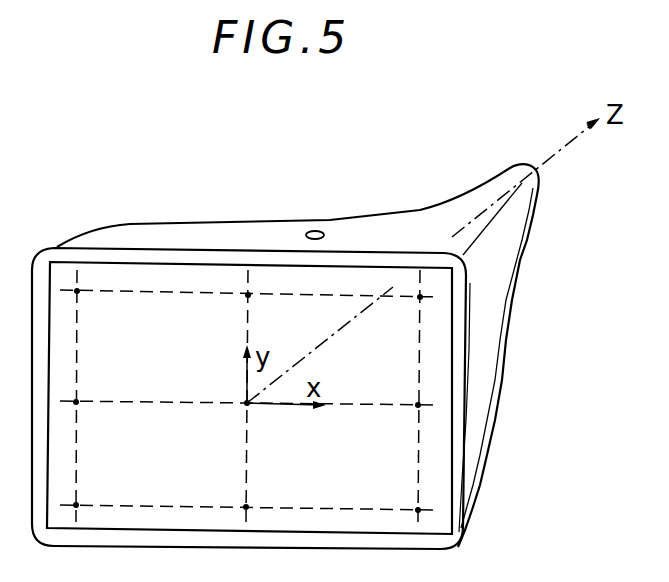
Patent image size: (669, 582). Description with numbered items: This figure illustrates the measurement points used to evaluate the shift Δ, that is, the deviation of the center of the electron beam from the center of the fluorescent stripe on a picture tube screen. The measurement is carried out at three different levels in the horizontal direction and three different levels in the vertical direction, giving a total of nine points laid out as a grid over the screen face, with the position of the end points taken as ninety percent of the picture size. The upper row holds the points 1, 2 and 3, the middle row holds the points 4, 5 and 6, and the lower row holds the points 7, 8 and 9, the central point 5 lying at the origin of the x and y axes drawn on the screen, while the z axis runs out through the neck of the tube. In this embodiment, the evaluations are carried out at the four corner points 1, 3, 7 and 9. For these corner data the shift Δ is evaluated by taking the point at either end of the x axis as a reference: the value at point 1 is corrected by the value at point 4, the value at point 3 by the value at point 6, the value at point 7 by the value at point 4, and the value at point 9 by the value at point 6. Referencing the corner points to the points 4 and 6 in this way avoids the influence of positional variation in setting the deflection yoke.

The measurement point 1 is at (91, 305).
The measurement point 2 is at (261, 308).
The measurement point 3 is at (433, 310).
The measurement point 4 is at (90, 415).
The measurement point 5 is at (260, 416).
The measurement point 6 is at (431, 419).
The measurement point 7 is at (90, 491).
The measurement point 8 is at (259, 492).
The measurement point 9 is at (431, 496).